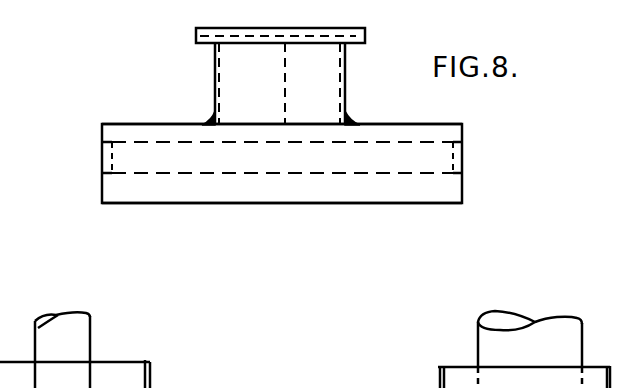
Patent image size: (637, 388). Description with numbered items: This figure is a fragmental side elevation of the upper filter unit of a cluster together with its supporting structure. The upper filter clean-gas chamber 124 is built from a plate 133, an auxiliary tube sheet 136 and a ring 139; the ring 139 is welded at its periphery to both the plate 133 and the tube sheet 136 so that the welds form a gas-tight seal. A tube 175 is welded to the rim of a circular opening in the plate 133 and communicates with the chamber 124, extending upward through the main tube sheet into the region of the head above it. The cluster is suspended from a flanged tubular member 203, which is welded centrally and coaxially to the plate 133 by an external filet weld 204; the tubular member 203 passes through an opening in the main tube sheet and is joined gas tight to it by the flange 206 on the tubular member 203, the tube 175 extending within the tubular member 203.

The filter clean-gas chamber 124 is at (393, 207).
The plate 133 is at (177, 122).
The tube sheet 136 is at (170, 196).
The ring 139 is at (112, 157).
The tube 175 is at (343, 80).
The flanged tubular member 203 is at (212, 63).
The external filet weld 204 is at (207, 123).
The flange 206 is at (196, 33).